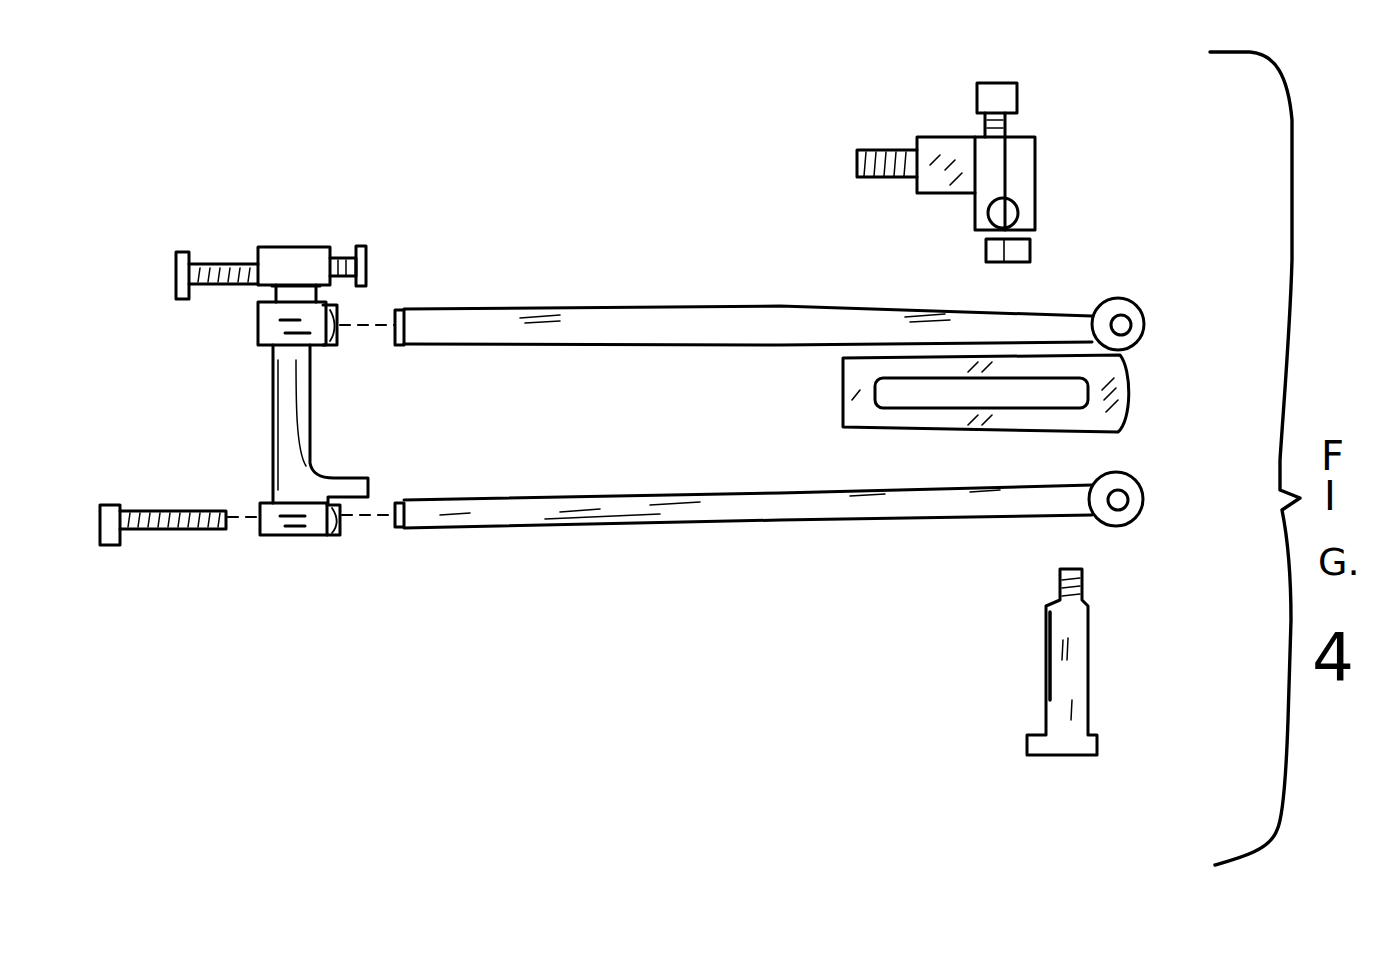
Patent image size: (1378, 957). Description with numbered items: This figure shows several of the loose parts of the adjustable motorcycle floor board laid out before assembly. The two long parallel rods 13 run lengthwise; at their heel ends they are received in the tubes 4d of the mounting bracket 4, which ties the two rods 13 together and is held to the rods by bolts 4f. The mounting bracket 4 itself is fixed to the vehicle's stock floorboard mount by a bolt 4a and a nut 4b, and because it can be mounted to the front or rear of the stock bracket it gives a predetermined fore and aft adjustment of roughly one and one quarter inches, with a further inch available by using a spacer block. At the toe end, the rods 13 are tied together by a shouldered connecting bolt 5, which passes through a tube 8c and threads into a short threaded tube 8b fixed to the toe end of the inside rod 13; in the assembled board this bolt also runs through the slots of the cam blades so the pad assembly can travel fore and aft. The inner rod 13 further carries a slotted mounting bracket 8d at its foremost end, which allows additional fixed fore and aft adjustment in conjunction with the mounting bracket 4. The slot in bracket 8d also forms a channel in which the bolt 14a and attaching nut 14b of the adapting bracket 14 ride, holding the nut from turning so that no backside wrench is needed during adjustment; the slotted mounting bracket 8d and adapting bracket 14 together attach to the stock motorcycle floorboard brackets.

The mounting bracket 4 is at (318, 236).
The bolt 4a is at (372, 250).
The nut 4b is at (176, 262).
The tubes 4d is at (340, 308).
The bolts 4f is at (160, 510).
The rods 13 is at (596, 306).
The short threaded tube 8b is at (1152, 316).
The tube 8c is at (1142, 476).
The slotted mounting bracket 8d is at (843, 401).
The adapting bracket 14 is at (1054, 198).
The bolt 14a is at (1020, 92).
The attaching nut 14b is at (985, 250).
The shouldered connecting bolt 5 is at (1090, 660).